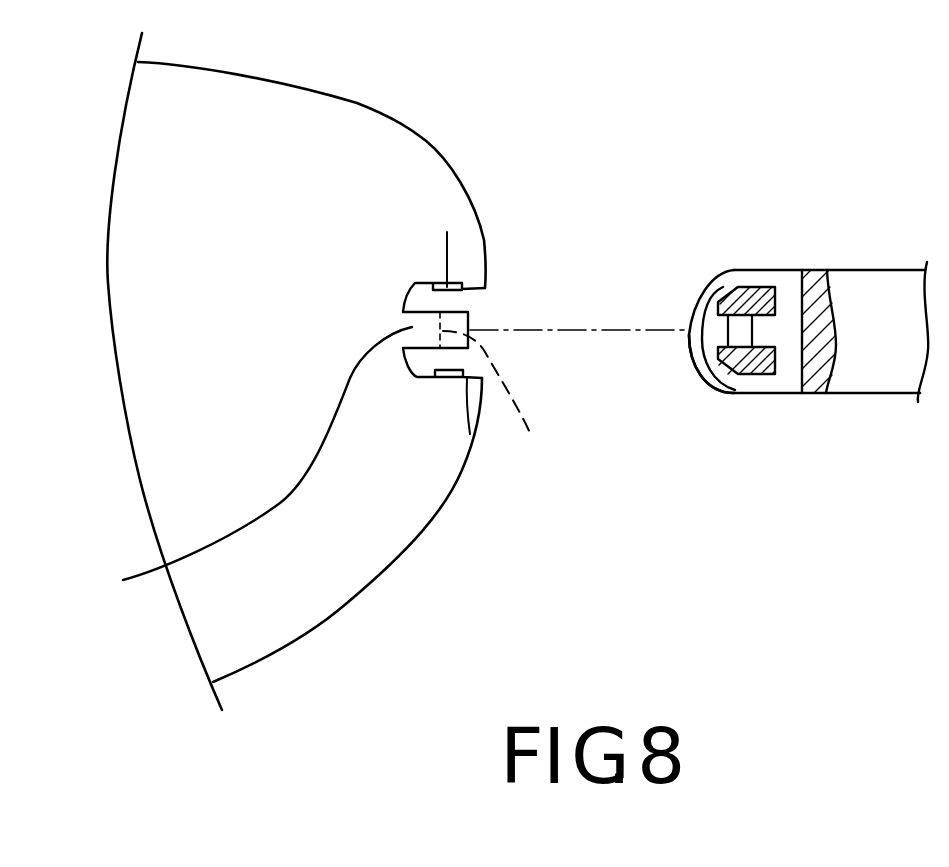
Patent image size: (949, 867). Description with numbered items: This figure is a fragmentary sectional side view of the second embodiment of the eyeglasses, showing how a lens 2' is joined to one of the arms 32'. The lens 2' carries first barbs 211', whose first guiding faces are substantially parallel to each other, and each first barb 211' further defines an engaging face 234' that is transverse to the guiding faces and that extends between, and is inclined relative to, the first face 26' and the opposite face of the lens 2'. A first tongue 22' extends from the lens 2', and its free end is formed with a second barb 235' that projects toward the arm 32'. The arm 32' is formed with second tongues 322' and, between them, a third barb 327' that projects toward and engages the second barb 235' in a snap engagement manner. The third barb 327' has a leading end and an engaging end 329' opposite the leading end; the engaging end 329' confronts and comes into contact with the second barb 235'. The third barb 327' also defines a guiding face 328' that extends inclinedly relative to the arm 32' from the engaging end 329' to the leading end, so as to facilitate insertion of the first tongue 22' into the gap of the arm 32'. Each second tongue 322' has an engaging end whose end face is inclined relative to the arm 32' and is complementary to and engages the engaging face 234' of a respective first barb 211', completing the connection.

The lens 2' is at (296, 366).
The first tongue 22' is at (242, 466).
The first face 26' is at (347, 530).
The first barb 211' is at (511, 335).
The engaging face 234' is at (485, 207).
The second barb 235' is at (507, 402).
The arm 32' is at (808, 381).
The second tongue 322' is at (776, 321).
The third barb 327' is at (714, 258).
The guiding face 328' is at (687, 390).
The engaging end 329' is at (805, 393).